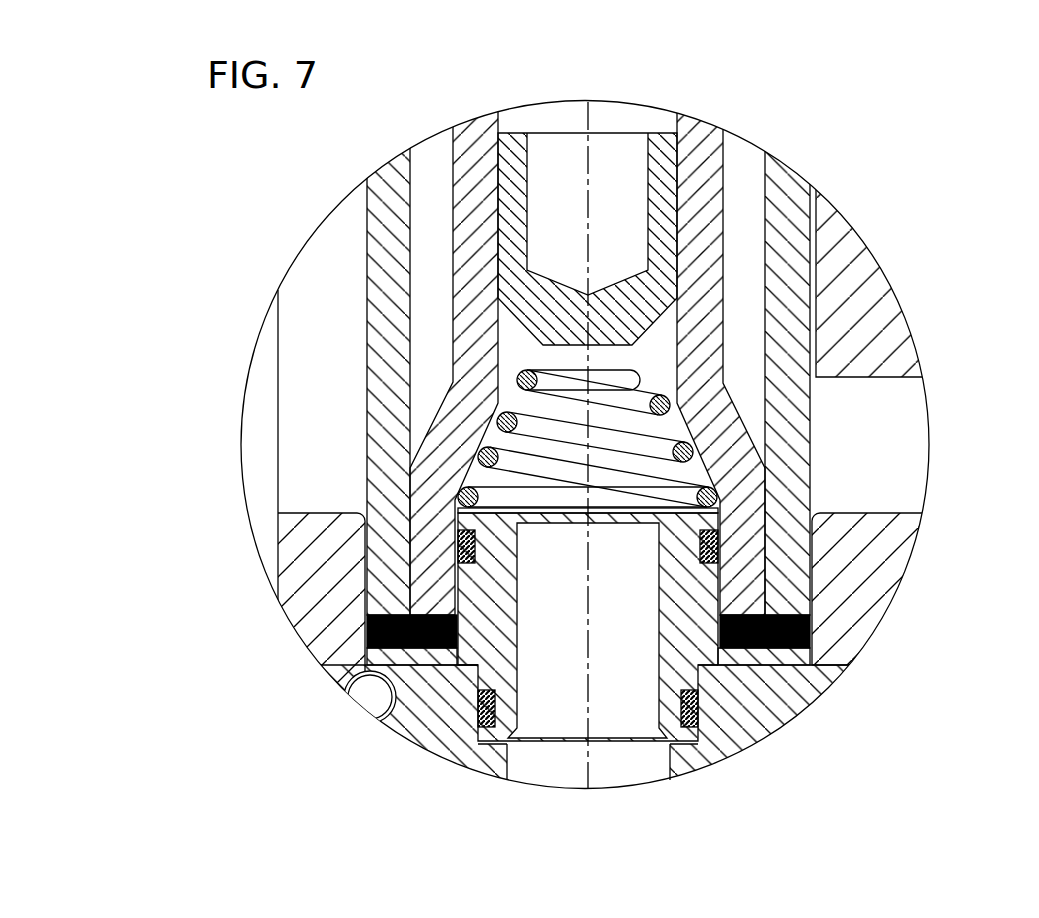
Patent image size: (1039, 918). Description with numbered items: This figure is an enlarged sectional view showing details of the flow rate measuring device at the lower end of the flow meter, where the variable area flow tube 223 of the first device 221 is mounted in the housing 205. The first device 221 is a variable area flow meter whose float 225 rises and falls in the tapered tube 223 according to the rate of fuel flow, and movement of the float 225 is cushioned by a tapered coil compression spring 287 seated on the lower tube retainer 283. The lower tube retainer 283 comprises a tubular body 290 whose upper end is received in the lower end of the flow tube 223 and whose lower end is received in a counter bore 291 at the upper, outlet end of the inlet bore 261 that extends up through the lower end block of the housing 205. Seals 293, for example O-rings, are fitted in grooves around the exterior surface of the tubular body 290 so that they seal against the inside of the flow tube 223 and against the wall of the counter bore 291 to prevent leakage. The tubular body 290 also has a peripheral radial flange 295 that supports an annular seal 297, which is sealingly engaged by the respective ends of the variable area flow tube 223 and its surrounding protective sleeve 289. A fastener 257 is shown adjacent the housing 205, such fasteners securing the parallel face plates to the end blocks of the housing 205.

The housing 205 is at (460, 755).
The first device 221 is at (571, 439).
The variable area flow tube 223 is at (708, 153).
The float 225 is at (660, 153).
The fastener 257 is at (863, 310).
The inlet bore 261 is at (508, 763).
The lower tube retainer 283 is at (380, 675).
The tapered coil compression spring 287 is at (525, 380).
The protective sleeve 289 is at (375, 268).
The tubular body 290 is at (483, 607).
The counter bore 291 is at (702, 690).
The seal 293 is at (707, 540).
The peripheral radial flange 295 is at (790, 660).
The annular seal 297 is at (497, 667).